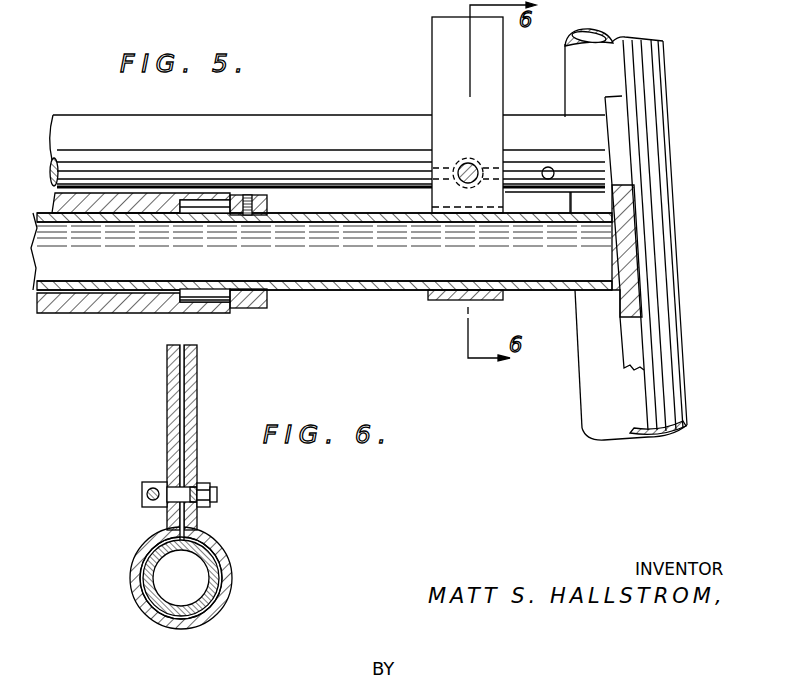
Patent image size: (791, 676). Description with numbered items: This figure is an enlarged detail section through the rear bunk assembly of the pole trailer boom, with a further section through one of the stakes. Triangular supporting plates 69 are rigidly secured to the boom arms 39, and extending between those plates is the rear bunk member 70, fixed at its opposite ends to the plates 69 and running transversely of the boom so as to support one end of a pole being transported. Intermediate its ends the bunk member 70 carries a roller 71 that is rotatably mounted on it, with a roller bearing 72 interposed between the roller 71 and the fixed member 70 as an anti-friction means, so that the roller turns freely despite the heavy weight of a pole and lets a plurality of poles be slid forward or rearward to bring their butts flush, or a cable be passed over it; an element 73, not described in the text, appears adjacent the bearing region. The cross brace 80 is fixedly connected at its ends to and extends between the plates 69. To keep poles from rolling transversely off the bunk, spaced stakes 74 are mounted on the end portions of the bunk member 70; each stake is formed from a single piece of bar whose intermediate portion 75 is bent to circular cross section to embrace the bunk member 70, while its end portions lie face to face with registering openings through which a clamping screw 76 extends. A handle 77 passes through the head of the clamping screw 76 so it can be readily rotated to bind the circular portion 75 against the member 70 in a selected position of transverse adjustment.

In FIG. 5, the boom arms 39 is at (567, 72).
In FIG. 5, the triangular supporting plates 69 is at (631, 238).
In FIG. 5, the rear bunk member 70 is at (355, 292).
In FIG. 6, the rear bunk member 70 is at (140, 602).
In FIG. 5, the roller 71 is at (121, 304).
In FIG. 5, the roller bearing 72 is at (214, 306).
In FIG. 5, the key 73 is at (268, 202).
In FIG. 5, the stakes 74 is at (436, 72).
In FIG. 6, the stakes 74 is at (198, 426).
In FIG. 5, the circular intermediate portions 75 is at (445, 302).
In FIG. 6, the circular intermediate portions 75 is at (212, 626).
In FIG. 5, the clamping screw 76 is at (470, 162).
In FIG. 6, the clamping screw 76 is at (218, 496).
In FIG. 5, the handle 77 is at (527, 171).
In FIG. 6, the handle 77 is at (142, 491).
In FIG. 5, the cross brace 80 is at (300, 124).